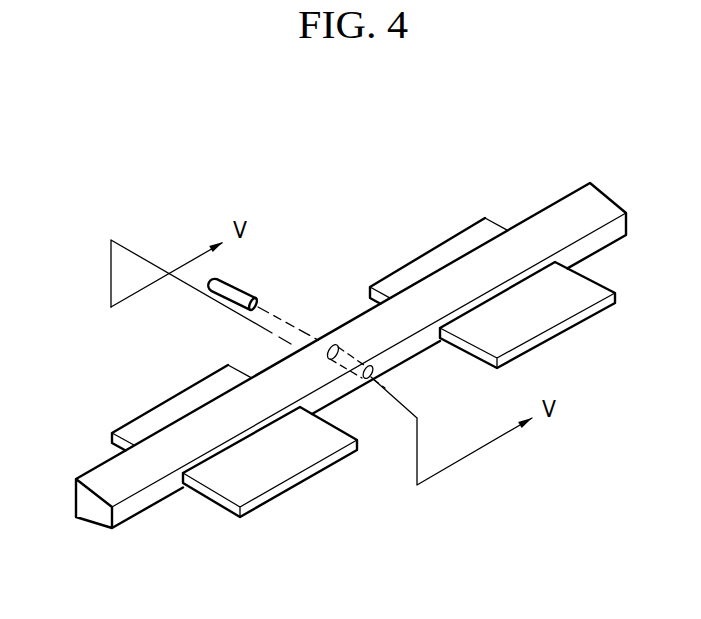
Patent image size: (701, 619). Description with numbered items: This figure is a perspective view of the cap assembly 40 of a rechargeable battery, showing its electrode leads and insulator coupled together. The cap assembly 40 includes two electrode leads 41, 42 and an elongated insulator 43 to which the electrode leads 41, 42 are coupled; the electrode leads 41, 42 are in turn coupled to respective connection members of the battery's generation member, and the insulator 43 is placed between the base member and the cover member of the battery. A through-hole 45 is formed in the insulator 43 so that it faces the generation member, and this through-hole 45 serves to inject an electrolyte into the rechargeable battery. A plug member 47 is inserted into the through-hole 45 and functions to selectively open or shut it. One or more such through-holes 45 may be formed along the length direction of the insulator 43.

The cap assembly 40 is at (214, 203).
The electrode lead 41 is at (465, 237).
The electrode lead 42 is at (157, 412).
The insulator 43 is at (92, 515).
The through-hole 45 is at (376, 370).
The plug member 47 is at (240, 292).